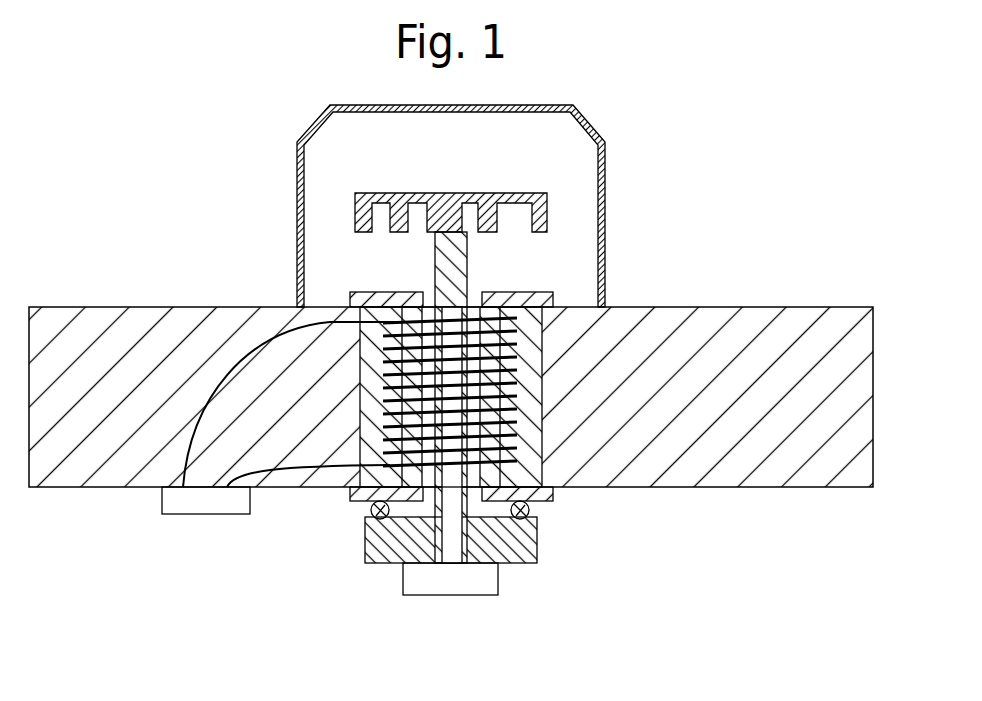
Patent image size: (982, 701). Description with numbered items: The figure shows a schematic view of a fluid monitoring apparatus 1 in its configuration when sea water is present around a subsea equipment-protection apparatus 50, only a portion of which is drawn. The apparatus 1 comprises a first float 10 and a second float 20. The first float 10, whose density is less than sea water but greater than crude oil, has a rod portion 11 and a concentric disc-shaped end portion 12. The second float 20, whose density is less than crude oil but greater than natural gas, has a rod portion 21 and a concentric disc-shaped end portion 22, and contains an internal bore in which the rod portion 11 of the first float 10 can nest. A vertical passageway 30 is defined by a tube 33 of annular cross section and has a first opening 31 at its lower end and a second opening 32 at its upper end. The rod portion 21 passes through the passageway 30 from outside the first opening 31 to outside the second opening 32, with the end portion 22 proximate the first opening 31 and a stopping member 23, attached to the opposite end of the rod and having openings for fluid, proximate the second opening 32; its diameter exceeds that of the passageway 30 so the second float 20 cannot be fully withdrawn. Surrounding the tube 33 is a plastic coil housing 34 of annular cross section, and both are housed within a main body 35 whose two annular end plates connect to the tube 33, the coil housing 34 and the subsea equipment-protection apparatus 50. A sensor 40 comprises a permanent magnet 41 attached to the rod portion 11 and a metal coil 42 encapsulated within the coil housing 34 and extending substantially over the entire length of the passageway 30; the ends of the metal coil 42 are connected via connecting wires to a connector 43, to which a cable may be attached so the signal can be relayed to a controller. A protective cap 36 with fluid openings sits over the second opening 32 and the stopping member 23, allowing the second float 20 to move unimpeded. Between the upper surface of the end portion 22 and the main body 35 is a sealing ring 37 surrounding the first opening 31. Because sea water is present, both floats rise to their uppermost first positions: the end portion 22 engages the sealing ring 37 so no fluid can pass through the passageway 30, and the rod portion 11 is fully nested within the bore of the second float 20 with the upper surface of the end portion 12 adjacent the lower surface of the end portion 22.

The fluid monitoring apparatus 1 is at (642, 70).
The first float 10 is at (514, 582).
The rod portion 11 is at (440, 545).
The end portion 12 is at (458, 583).
The second float 20 is at (552, 550).
The rod portion 21 is at (437, 503).
The end portion 22 is at (383, 553).
The stopping member 23 is at (523, 193).
The passageway 30 is at (472, 305).
The first opening 31 is at (463, 560).
The second opening 32 is at (427, 305).
The tube 33 is at (485, 305).
The coil housing 34 is at (530, 364).
The main body 35 is at (551, 493).
The protective cap 36 is at (295, 146).
The sealing ring 37 is at (530, 508).
The sensor 40 is at (358, 372).
The permanent magnet 41 is at (448, 340).
The metal coil 42 is at (383, 415).
The connector 43 is at (188, 507).
The subsea equipment-protection apparatus 50 is at (95, 322).